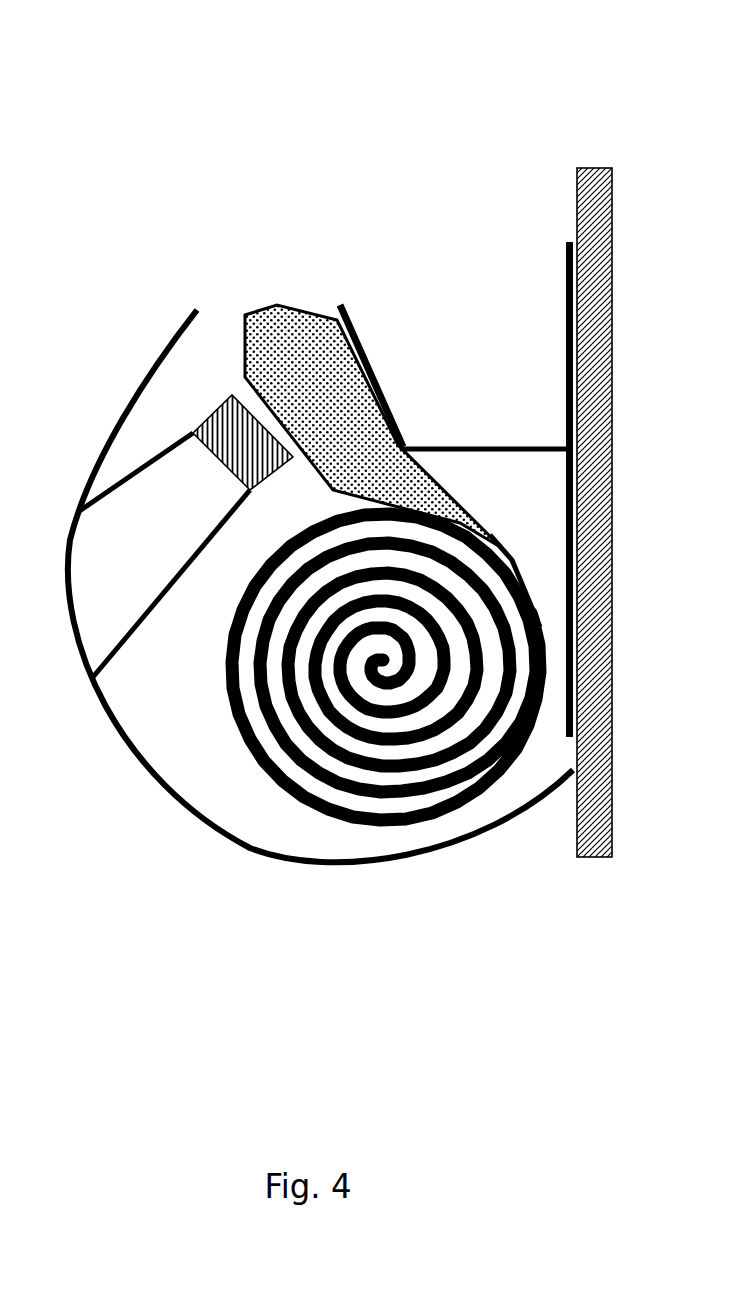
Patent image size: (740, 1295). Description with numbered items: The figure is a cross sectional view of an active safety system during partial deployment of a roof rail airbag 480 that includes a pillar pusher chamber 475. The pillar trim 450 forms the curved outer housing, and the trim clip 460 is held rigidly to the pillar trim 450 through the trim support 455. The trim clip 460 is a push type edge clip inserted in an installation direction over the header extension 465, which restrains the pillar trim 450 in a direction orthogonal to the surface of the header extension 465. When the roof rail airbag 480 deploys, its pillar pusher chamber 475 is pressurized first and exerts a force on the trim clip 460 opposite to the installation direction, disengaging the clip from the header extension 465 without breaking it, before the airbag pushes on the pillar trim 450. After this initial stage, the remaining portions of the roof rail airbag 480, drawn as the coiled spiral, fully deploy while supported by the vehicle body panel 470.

The pillar trim 450 is at (183, 290).
The trim support 455 is at (153, 433).
The trim clip 460 is at (214, 397).
The header extension 465 is at (466, 435).
The vehicle body panel 470 is at (596, 158).
The pillar pusher chamber 475 is at (343, 387).
The roof rail airbag 480 is at (437, 839).